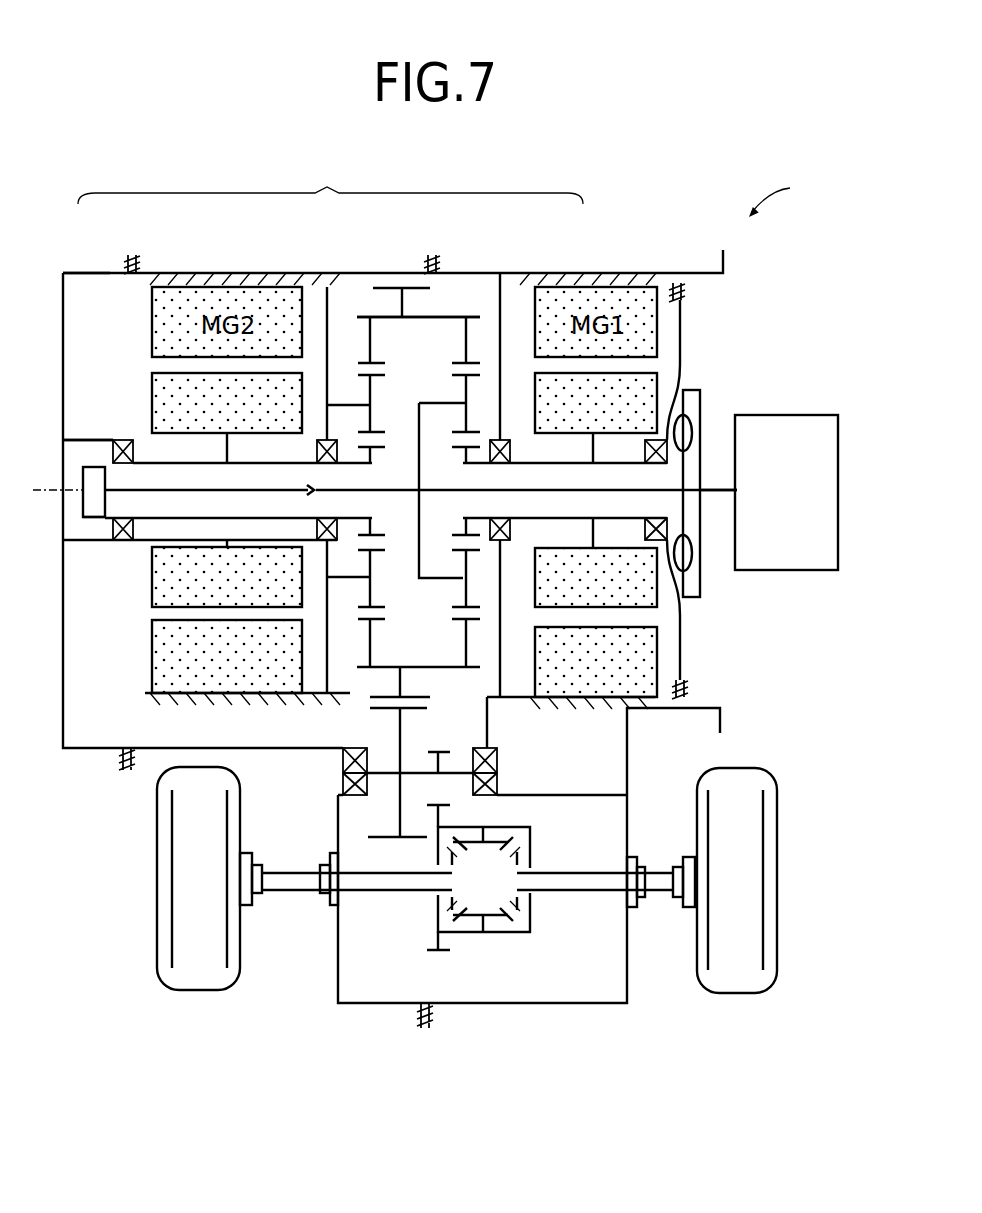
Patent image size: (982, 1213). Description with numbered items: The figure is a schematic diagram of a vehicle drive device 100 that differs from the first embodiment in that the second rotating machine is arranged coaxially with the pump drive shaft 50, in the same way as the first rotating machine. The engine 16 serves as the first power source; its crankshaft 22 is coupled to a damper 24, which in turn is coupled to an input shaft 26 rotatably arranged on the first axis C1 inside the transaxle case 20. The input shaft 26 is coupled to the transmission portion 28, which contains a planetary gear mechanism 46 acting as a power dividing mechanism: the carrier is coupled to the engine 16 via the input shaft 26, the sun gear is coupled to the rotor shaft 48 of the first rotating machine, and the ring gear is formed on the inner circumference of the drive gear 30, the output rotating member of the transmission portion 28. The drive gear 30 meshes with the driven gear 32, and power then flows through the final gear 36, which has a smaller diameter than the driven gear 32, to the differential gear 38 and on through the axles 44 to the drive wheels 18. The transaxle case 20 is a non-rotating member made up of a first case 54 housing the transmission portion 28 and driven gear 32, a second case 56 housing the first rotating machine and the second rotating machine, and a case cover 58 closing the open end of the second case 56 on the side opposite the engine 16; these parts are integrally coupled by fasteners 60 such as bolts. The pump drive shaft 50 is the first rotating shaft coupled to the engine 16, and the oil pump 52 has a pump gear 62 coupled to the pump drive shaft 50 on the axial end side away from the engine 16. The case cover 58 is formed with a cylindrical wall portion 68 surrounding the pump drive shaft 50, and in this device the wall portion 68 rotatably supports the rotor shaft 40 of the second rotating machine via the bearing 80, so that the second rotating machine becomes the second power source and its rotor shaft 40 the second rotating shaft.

The vehicle drive device 100 is at (788, 195).
The transaxle case 20 is at (330, 183).
The case cover 58 is at (66, 272).
The fasteners 60 is at (423, 1026).
The second case 56 is at (222, 272).
The first case 54 is at (528, 272).
The transmission portion 28 is at (381, 262).
The planetary gear mechanism 46 is at (469, 298).
The rotor shaft of the first rotating machine 48 is at (523, 457).
The bearing 80 is at (122, 440).
The rotor shaft of the second rotating machine 40 is at (142, 462).
The wall portion 68 is at (88, 458).
The first axis C1 is at (50, 487).
The pump gear 62 is at (90, 492).
The oil pump 52 is at (94, 528).
The pump drive shaft 50 is at (230, 490).
The input shaft 26 is at (592, 492).
The damper 24 is at (688, 390).
The crankshaft 22 is at (713, 497).
The engine 16 is at (772, 562).
The drive gear 30 is at (412, 696).
The driven gear 32 is at (409, 710).
The final gear 36 is at (436, 800).
The differential gear 38 is at (509, 937).
The axles 44 is at (660, 890).
The drive wheels 18 is at (742, 985).